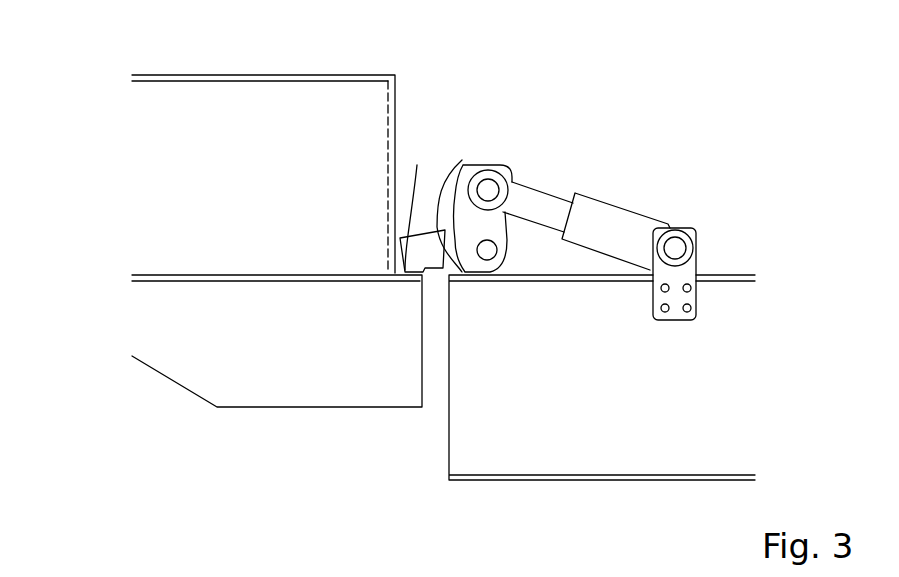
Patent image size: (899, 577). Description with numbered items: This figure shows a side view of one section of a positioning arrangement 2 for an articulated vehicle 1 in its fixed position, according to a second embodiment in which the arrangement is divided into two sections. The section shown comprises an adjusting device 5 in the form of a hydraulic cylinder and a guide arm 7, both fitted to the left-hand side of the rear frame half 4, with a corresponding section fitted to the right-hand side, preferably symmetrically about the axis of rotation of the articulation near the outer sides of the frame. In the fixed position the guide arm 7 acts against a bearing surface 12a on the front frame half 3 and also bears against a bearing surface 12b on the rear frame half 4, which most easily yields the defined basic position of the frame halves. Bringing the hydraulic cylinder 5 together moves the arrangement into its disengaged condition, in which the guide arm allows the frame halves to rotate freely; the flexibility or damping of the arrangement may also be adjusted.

The vehicle 1 is at (44, 22).
The positioning arrangement 2 is at (567, 122).
The front frame half 3 is at (188, 333).
The rear frame half 4 is at (697, 395).
The adjusting device 5 is at (627, 215).
The guide arm 7 is at (430, 250).
The bearing surface 12a is at (417, 165).
The bearing surface 12b is at (452, 162).